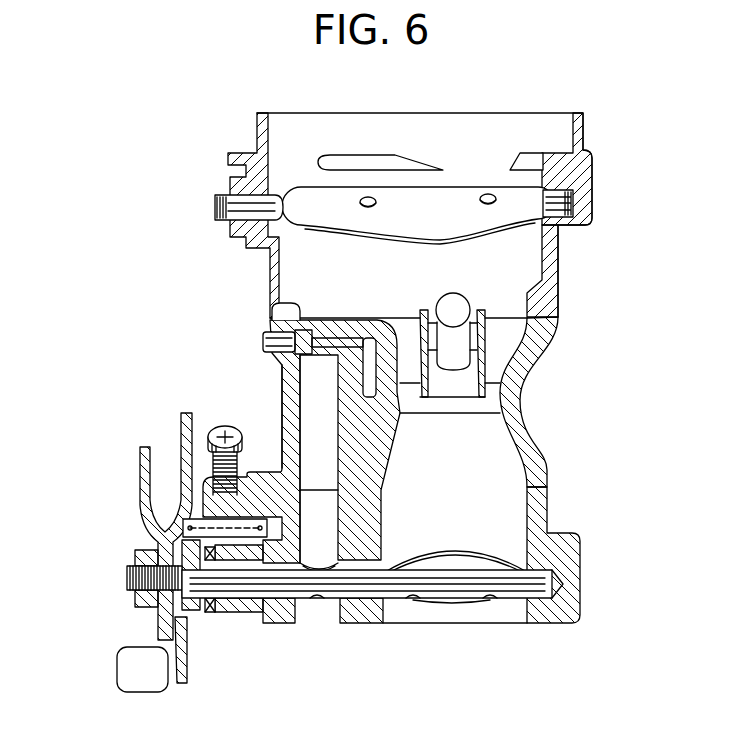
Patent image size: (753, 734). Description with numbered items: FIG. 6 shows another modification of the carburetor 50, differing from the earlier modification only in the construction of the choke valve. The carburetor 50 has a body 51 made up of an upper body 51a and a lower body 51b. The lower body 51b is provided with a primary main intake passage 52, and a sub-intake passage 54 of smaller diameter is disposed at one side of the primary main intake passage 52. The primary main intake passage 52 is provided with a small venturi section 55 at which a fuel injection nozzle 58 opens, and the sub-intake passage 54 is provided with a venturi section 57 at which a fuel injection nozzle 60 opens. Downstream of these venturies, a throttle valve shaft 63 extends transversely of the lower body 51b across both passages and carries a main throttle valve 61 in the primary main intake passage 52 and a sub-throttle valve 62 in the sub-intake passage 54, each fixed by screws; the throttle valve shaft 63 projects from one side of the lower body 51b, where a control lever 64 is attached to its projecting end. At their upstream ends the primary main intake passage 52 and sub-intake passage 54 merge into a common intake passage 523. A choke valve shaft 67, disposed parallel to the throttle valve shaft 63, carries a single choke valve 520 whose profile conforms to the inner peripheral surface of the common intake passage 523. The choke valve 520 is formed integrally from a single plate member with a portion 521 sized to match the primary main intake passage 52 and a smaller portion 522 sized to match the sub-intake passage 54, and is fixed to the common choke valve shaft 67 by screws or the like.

The carburetor 50 is at (541, 107).
The choke valve 520 is at (466, 187).
The smaller portion 522 is at (335, 210).
The portion 521 is at (443, 222).
The choke valve shaft 67 is at (562, 200).
The common intake passage 523 is at (301, 247).
The upper body 51a is at (545, 293).
The body 51 is at (557, 323).
The lower body 51b is at (512, 382).
The sub-intake passage 54 is at (303, 410).
The venturi section 57 is at (299, 319).
The fuel injection nozzle 60 is at (326, 340).
The small venturi section 55 is at (434, 375).
The fuel injection nozzle 58 is at (459, 305).
The primary main intake passage 52 is at (493, 463).
The sub-throttle valve 62 is at (320, 574).
The control lever 64 is at (141, 458).
The throttle valve shaft 63 is at (238, 586).
The main throttle valve 61 is at (450, 566).